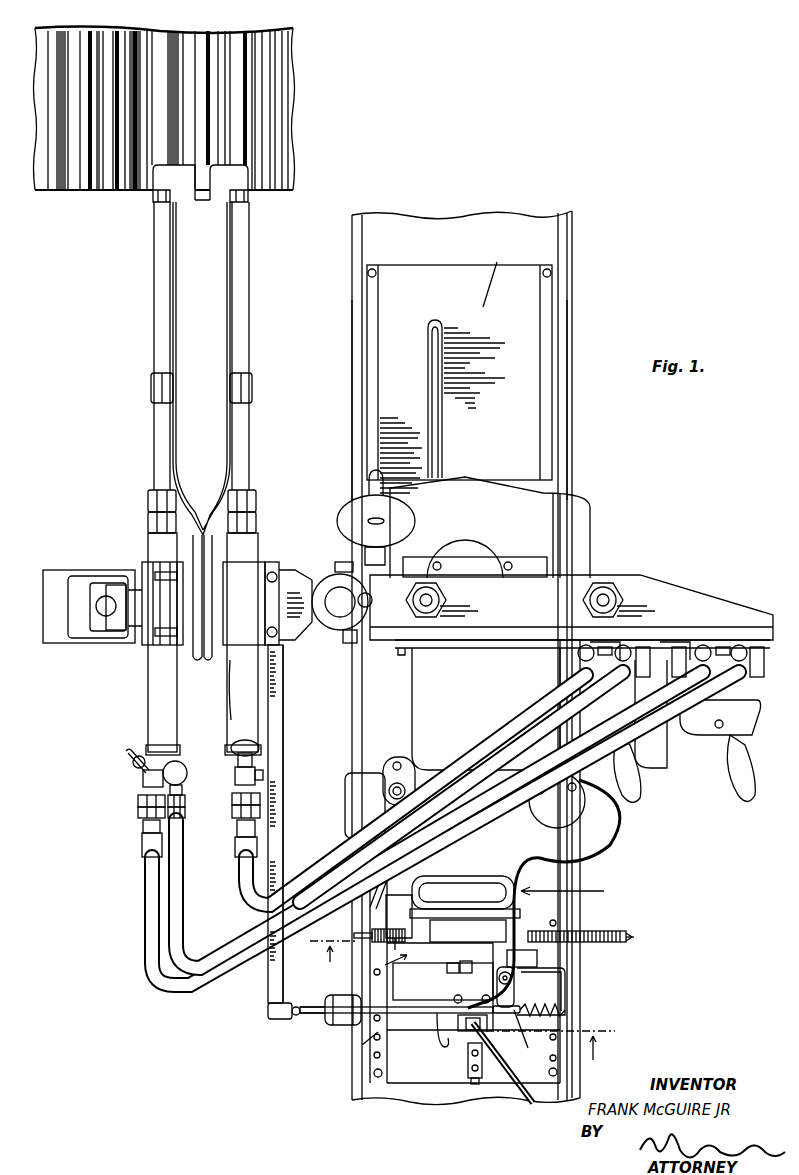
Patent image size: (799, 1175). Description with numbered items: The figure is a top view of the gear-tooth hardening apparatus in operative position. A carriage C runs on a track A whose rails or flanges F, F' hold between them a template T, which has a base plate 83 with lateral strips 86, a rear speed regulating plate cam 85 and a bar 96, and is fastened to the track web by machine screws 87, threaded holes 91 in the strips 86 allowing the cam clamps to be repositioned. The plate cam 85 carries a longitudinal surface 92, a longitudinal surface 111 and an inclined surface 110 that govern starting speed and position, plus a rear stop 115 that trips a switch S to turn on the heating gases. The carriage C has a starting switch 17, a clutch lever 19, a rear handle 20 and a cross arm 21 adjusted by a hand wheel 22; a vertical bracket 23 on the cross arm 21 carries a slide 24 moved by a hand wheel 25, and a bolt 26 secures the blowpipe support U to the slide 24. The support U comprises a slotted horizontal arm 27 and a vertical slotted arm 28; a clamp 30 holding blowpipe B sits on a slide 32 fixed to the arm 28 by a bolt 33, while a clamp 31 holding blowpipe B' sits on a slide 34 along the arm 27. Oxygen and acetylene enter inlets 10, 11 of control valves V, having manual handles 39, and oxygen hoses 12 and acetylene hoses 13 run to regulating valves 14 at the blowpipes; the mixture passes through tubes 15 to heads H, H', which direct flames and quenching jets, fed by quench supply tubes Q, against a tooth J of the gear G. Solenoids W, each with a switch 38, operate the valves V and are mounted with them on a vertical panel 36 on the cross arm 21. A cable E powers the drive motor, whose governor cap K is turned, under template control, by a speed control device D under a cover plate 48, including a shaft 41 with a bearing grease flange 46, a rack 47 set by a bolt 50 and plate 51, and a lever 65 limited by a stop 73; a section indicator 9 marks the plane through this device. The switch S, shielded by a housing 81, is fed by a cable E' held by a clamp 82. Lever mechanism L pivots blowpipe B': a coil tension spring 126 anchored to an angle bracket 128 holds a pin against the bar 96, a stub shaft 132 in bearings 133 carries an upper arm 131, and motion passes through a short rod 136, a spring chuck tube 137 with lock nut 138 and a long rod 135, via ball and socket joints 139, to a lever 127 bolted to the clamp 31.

The gear G is at (306, 103).
The head H is at (160, 197).
The tooth J is at (204, 200).
The head H' is at (247, 197).
The tubes 15 is at (250, 308).
The quench supply tubes Q is at (226, 450).
The blowpipe B is at (143, 638).
The blowpipe B' is at (259, 638).
The slide 32 is at (150, 570).
The clamp 30 is at (145, 645).
The slide 34 is at (226, 606).
The clamp 31 is at (240, 660).
The slide 24 is at (290, 632).
The bolt 26 is at (318, 641).
The hand wheel 25 is at (343, 643).
The vertical bracket 23 is at (340, 566).
The slotted horizontal arm 27 is at (68, 578).
The vertical slotted arm 28 is at (118, 640).
The blowpipe support U is at (103, 640).
The bolt 33 is at (104, 608).
The track A is at (480, 1134).
The template T is at (416, 1100).
The base plate 83 is at (494, 273).
The lateral strips 86 is at (553, 1090).
The flanges F is at (333, 400).
The column flange F' is at (588, 400).
The bar 96 is at (444, 440).
The carriage C is at (602, 533).
The hand wheel 22 is at (352, 503).
The cross arm 21 is at (678, 590).
The vertical panel 36 is at (487, 640).
The solenoids W is at (672, 771).
The control valves V is at (690, 738).
The handles 39 is at (745, 790).
The switch 17 is at (388, 797).
The lever 19 is at (540, 796).
The switch 38 is at (573, 792).
The cable E' is at (558, 960).
The rear speed regulating plate cam 85 is at (410, 1060).
The rear handle 20 is at (443, 895).
The speed adjusting cap K is at (570, 895).
The cover plate 48 is at (408, 910).
The cable E is at (360, 897).
The stop 73 is at (372, 940).
The lever 65 is at (354, 936).
The section indicator 9 is at (464, 1004).
The rack 47 is at (586, 943).
The plate 51 is at (620, 932).
The bolt 50 is at (634, 937).
The speed control device D is at (385, 965).
The switch S is at (446, 991).
The shaft 41 is at (455, 957).
The grease cap 46 is at (476, 957).
The housing 81 is at (454, 998).
The bearings 133 is at (520, 948).
The stub shaft 132 is at (512, 979).
The upper arm 131 is at (514, 996).
The angle shaped bracket 128 is at (566, 984).
The coil tension spring 126 is at (568, 1016).
The short rod 136 is at (500, 1016).
The ball and socket joints 139 is at (278, 1020).
The inclined surface 110 is at (408, 995).
The spring lock nut 138 is at (345, 1024).
The long rod 135 is at (286, 1013).
The spring chuck 137 is at (351, 1047).
The longitudinal surface 111 is at (437, 1040).
The clamp 82 is at (466, 1032).
The longitudinally extending surface 92 is at (468, 1058).
The rear stop 115 is at (474, 1090).
The threaded holes 91 is at (550, 1062).
The machine screws 87 is at (558, 1072).
The oxygen hoses 12 is at (560, 740).
The acetylene hoses 13 is at (475, 855).
The inlet 11 is at (740, 640).
The inlet 10 is at (588, 660).
The lever mechanism L is at (283, 713).
The lever 127 is at (284, 810).
The regulating valves 14 is at (238, 758).